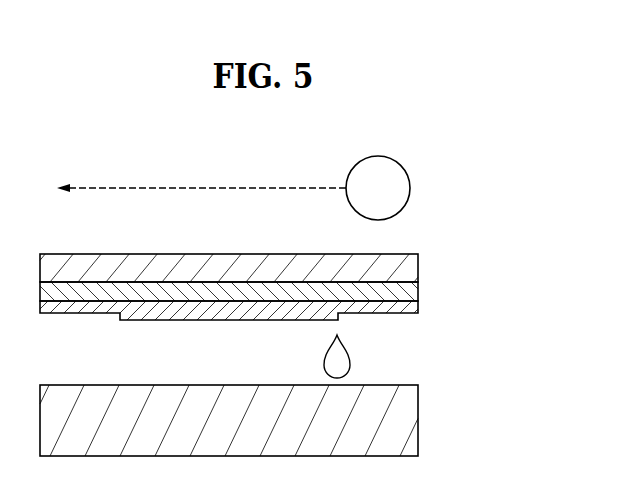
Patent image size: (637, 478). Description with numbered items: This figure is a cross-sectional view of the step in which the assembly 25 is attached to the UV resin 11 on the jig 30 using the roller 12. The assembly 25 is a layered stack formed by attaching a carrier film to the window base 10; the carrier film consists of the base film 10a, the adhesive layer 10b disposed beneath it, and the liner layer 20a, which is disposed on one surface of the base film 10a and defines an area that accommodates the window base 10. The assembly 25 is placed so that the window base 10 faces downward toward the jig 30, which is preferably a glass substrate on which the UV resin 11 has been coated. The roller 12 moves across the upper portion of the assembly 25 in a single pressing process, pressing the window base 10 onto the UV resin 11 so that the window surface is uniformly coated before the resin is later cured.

The window base 10 is at (269, 311).
The base film 10a is at (407, 265).
The adhesive layer 10b is at (405, 292).
The liner layer 20a is at (410, 308).
The assembly 25 is at (269, 283).
The roller 12 is at (399, 164).
The UV resin 11 is at (348, 362).
The jig 30 is at (407, 425).